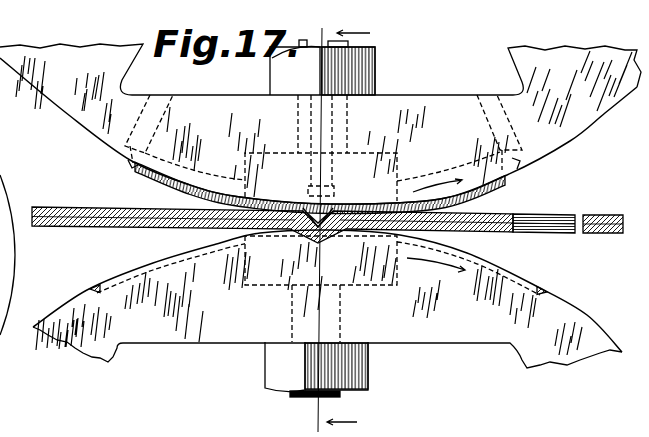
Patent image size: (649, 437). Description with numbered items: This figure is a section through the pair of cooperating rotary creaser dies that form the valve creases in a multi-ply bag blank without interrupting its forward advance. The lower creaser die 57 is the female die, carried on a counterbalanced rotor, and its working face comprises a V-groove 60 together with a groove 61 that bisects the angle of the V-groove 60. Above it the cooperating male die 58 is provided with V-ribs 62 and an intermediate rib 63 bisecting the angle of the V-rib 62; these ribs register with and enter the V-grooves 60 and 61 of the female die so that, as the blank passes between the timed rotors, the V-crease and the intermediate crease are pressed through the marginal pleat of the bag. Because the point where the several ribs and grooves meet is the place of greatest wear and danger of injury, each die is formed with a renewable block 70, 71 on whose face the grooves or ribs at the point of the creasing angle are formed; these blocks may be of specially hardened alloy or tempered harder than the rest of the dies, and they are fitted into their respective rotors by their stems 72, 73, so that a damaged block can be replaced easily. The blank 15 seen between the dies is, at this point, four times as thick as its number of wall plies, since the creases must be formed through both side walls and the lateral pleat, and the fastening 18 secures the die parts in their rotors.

The strip blank 15 is at (494, 233).
The clamping screw with nut 18 is at (299, 407).
The lower creaser die 57 is at (327, 299).
The male die 58 is at (320, 124).
The V-groove 60 is at (95, 293).
The groove 61 is at (284, 238).
The V-ribs 62 is at (147, 186).
The intermediate rib 63 is at (324, 205).
The renewable block 70 is at (275, 292).
The renewable block 71 is at (243, 154).
The stem 72 is at (281, 320).
The stem 73 is at (291, 140).